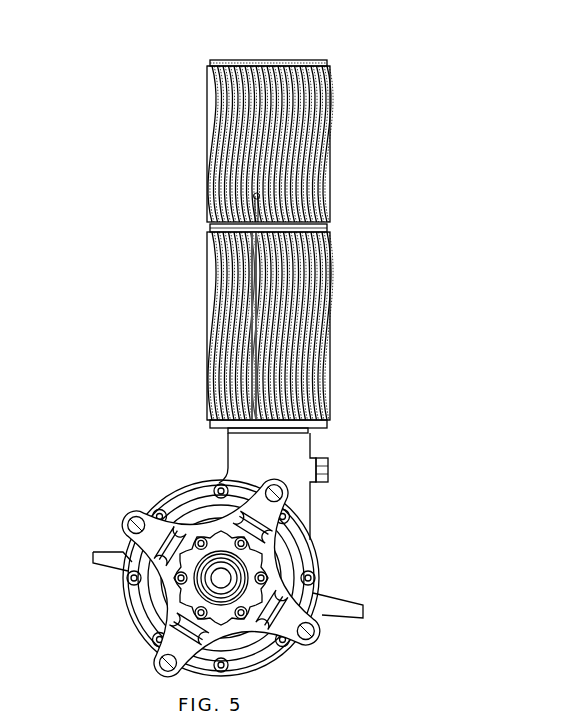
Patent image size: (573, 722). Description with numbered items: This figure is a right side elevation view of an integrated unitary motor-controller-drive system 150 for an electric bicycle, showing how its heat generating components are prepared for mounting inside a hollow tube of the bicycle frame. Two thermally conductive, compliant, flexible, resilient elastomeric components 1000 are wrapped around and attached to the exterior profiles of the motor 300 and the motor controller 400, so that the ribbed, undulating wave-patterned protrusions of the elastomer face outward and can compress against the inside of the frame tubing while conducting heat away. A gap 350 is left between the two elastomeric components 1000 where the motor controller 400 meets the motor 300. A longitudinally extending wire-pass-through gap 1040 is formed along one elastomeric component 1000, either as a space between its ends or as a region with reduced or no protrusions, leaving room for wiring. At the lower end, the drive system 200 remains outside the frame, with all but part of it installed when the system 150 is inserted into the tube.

The integrated unitary motor-controller-drive system 150 is at (451, 87).
The motor controller 400 is at (229, 61).
The elastomeric component 1000 is at (207, 140).
The wire-pass-through gap 1040 is at (251, 357).
The gap 350 is at (330, 227).
The motor 300 is at (211, 431).
The drive system 200 is at (340, 553).